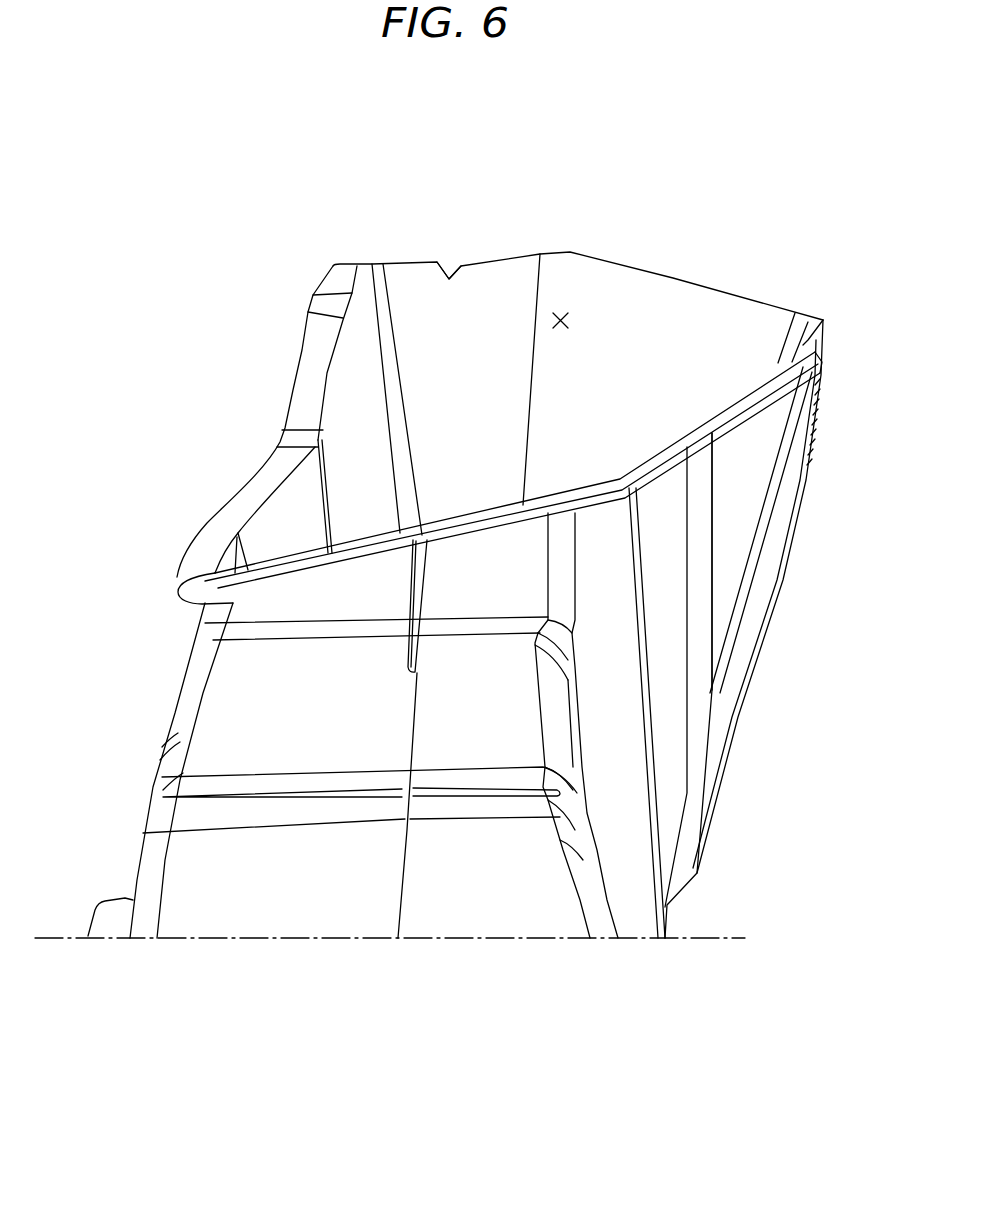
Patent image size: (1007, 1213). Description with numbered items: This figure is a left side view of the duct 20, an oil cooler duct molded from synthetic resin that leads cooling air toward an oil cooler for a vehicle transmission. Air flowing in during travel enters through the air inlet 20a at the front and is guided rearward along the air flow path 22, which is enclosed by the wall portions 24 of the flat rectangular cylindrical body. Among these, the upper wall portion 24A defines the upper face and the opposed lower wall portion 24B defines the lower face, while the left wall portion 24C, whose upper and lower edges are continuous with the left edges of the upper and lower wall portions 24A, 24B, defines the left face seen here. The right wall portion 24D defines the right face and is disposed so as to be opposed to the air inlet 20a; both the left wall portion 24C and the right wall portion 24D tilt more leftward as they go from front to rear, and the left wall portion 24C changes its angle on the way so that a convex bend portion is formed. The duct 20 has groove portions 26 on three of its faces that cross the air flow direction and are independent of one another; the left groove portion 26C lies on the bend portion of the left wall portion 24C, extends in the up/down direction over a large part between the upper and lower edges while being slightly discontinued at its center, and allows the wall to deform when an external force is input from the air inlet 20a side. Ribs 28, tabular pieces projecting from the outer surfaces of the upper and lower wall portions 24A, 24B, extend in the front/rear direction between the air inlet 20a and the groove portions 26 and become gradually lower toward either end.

The duct 20 is at (727, 236).
The air inlet 20a is at (462, 278).
The air flow path 22 is at (563, 317).
The wall portions 24 is at (475, 617).
The upper wall portion 24A is at (737, 518).
The lower wall portion 24B is at (167, 713).
The left wall portion 24C is at (475, 918).
The right wall portion 24D is at (625, 300).
The groove portions 26 is at (374, 781).
The left groove portion 26C is at (303, 793).
The ribs 28 is at (698, 648).